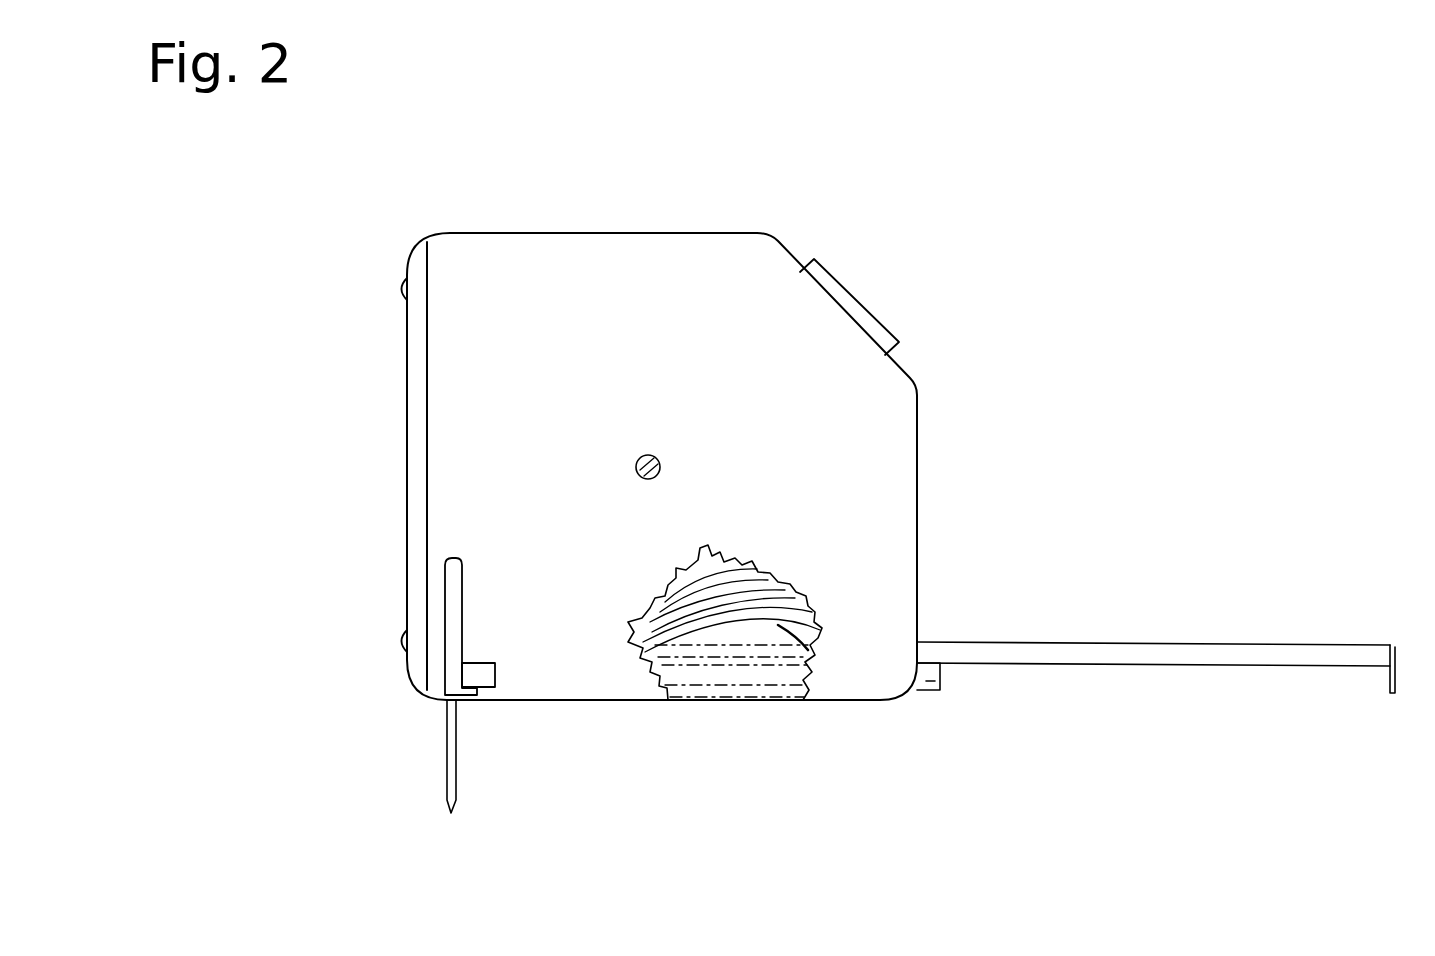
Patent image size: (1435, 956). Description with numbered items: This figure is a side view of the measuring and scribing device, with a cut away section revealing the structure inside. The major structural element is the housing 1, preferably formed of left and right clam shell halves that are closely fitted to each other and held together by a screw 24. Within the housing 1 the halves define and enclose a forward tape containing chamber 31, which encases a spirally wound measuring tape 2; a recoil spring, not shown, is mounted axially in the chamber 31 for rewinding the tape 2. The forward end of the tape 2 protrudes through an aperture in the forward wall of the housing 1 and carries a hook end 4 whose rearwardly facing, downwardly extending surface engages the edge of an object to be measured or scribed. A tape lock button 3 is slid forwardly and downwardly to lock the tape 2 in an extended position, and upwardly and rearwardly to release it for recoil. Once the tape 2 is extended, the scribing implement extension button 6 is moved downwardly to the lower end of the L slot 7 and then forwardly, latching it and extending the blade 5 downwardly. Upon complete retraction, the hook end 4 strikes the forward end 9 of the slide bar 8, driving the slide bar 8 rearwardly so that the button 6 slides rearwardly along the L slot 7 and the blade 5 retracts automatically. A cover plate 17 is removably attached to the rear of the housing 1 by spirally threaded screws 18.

The housing 1 is at (605, 290).
The measuring tape 2 is at (765, 591).
The tape lock button 3 is at (840, 280).
The hook end 4 is at (1390, 693).
The blade 5 is at (447, 773).
The scribing implement extension button 6 is at (482, 700).
The L slot 7 is at (455, 600).
The slide bar 8 is at (737, 682).
The forward end 9 is at (933, 682).
The cover plate 17 is at (417, 436).
The spirally threaded screws 18 is at (400, 283).
The screw 24 is at (660, 460).
The forward tape containing chamber 31 is at (808, 650).